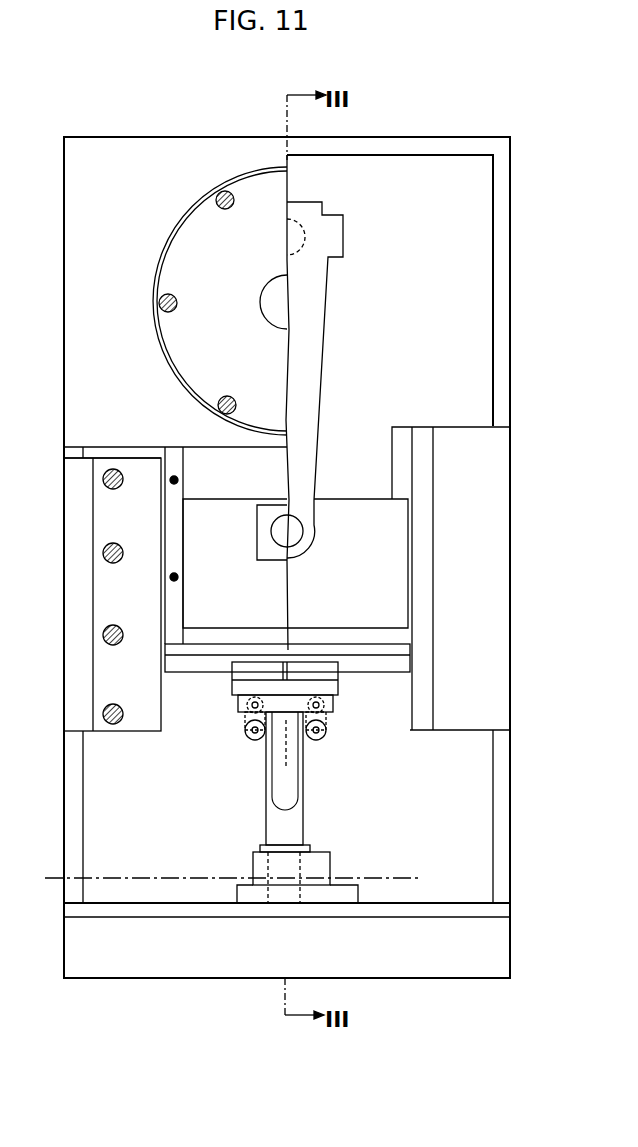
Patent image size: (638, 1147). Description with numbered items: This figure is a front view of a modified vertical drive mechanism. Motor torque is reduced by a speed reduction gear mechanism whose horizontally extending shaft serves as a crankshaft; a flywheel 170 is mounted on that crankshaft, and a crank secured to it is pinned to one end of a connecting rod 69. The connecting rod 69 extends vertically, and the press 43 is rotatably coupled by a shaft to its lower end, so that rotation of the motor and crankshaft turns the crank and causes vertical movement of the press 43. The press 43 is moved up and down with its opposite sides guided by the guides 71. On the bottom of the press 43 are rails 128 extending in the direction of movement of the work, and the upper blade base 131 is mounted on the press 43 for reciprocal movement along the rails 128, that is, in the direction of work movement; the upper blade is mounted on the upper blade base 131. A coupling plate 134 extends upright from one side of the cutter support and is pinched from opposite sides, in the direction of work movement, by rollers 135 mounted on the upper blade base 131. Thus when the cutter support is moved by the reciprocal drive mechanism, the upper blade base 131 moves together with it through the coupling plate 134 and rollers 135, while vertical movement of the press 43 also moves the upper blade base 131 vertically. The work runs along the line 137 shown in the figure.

The flywheel 170 is at (190, 228).
The connecting rod 69 is at (320, 353).
The press 43 is at (225, 511).
The guides 71 is at (176, 456).
The rail 128 is at (204, 666).
The upper blade base 131 is at (338, 698).
The rollers 135 is at (250, 739).
The coupling plate 134 is at (304, 822).
The line 137 is at (150, 878).